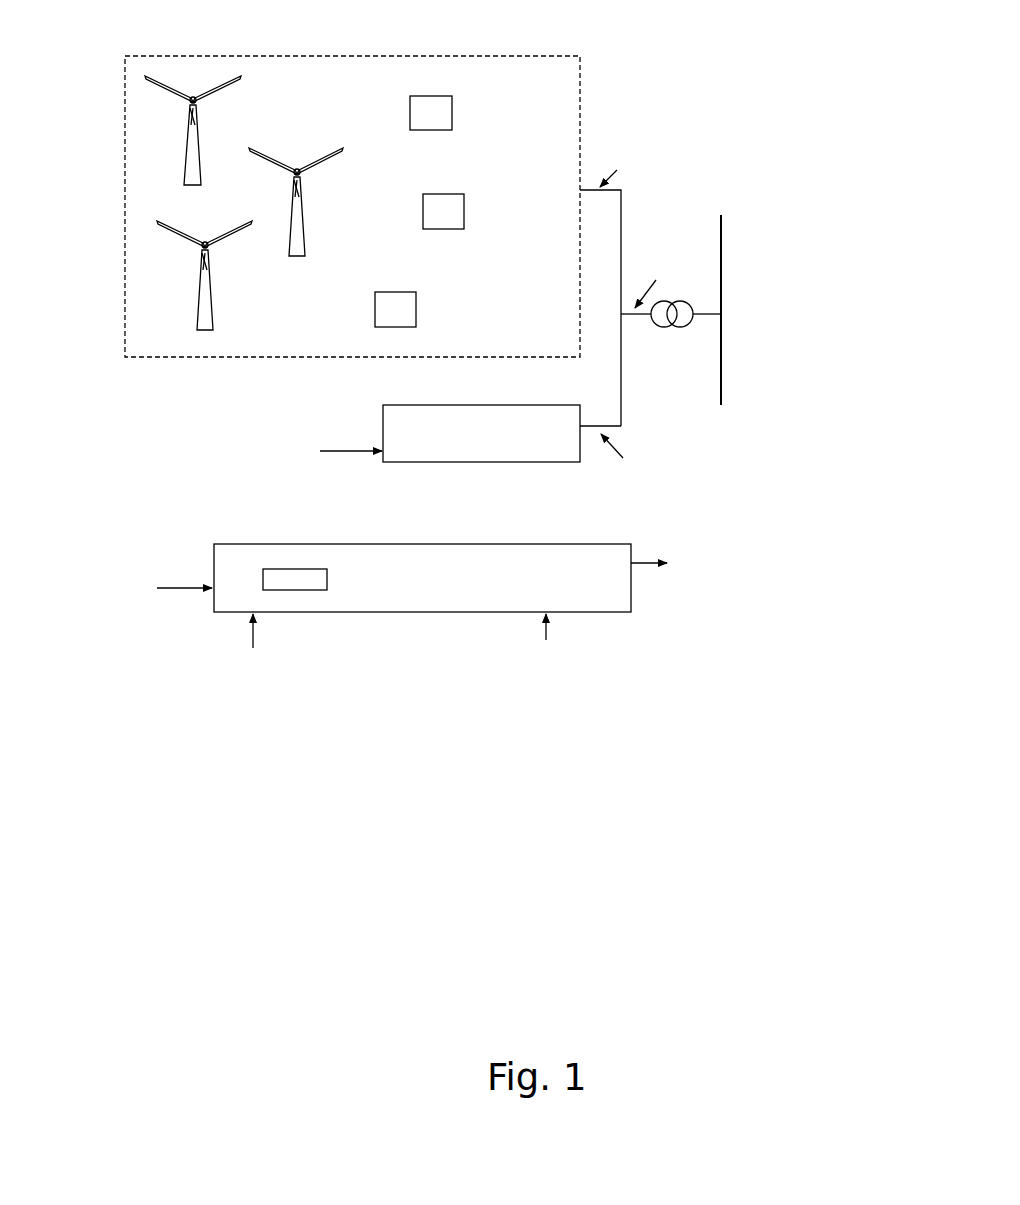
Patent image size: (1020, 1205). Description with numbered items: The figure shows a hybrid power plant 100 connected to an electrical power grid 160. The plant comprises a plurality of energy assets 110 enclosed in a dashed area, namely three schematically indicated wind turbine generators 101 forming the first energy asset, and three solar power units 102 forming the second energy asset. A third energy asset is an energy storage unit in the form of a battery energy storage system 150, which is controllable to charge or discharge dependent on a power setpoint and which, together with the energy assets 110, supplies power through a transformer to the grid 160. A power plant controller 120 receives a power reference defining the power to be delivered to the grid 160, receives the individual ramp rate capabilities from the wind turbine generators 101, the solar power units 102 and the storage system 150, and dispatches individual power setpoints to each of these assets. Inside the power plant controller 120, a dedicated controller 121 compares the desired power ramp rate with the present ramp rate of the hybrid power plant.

The hybrid power plant 100 is at (86, 66).
The plurality of energy assets 110 is at (354, 54).
The wind turbine generators 101 is at (218, 318).
The solar power units 102 is at (453, 110).
The battery energy storage system 150 is at (379, 414).
The electrical power grid 160 is at (714, 230).
The power plant controller 120 is at (292, 543).
The dedicated controller 121 is at (333, 581).